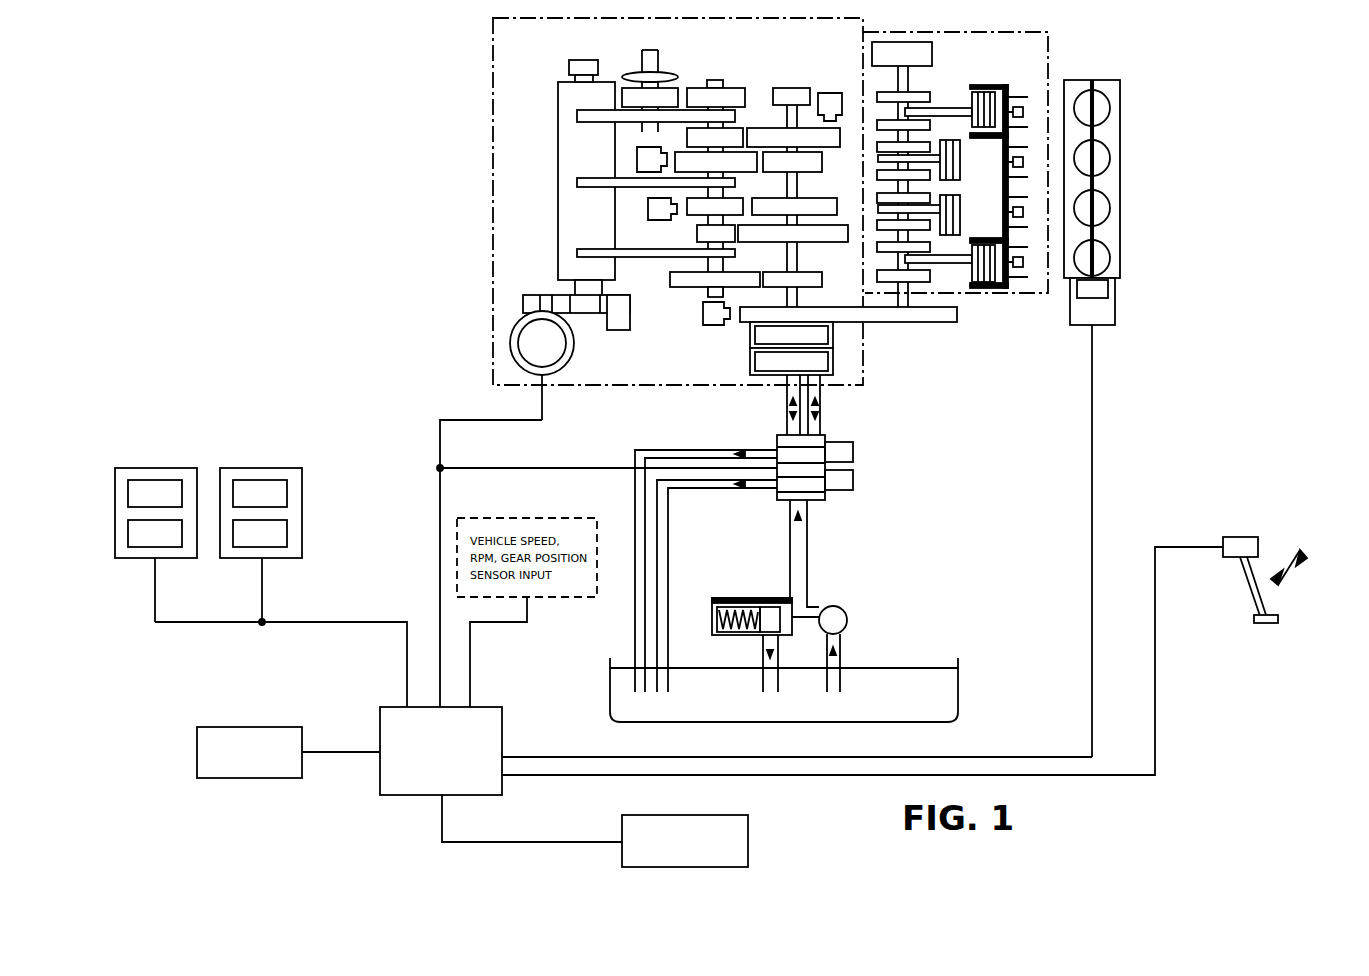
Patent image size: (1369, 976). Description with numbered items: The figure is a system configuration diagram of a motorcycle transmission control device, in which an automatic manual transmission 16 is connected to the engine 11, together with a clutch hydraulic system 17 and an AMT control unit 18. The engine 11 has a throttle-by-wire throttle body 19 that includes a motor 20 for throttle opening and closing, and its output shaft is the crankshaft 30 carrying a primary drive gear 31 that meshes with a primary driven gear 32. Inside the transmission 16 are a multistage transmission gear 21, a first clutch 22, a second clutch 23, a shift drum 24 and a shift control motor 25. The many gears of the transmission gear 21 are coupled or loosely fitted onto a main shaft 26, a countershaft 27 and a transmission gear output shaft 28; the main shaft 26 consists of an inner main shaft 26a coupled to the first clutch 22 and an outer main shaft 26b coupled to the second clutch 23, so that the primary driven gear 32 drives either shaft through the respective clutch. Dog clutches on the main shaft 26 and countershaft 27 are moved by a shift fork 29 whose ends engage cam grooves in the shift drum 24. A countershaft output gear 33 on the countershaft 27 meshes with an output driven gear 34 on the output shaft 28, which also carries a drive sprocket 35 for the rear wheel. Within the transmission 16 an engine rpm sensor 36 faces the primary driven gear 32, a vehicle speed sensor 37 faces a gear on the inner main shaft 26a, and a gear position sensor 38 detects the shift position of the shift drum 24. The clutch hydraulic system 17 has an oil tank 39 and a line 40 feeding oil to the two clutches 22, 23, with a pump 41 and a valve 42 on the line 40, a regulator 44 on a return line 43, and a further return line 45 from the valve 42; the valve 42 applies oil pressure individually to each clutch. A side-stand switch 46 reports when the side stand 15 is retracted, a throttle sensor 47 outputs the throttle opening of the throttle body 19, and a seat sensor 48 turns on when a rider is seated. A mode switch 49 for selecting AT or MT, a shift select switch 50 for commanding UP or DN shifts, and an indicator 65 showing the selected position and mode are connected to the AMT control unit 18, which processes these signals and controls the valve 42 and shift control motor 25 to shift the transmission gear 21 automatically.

The engine 11 is at (1052, 47).
The side stand 15 is at (1268, 606).
The automatic manual transmission 16 is at (488, 88).
The clutch hydraulic system 17 is at (962, 702).
The AMT control unit 18 is at (487, 707).
The throttle body 19 is at (1120, 96).
The motor 20 is at (1108, 325).
The transmission gear 21 is at (650, 344).
The first clutch 22 is at (836, 362).
The second clutch 23 is at (836, 336).
The shift drum 24 is at (558, 100).
The shift control motor 25 is at (510, 345).
The main shaft 26 is at (800, 180).
The inner main shaft 26a is at (800, 295).
The outer main shaft 26b is at (800, 253).
The countershaft 27 is at (712, 264).
The transmission gear output shaft 28 is at (662, 134).
The shift fork 29 is at (587, 118).
The crankshaft 30 is at (925, 298).
The primary drive gear 31 is at (957, 320).
The primary driven gear 32 is at (755, 322).
The countershaft output gear 33 is at (738, 88).
The output driven gear 34 is at (670, 90).
The drive sprocket 35 is at (640, 74).
The engine rpm sensor 36 is at (702, 316).
The vehicle speed sensor 37 is at (830, 93).
The gear position sensor 38 is at (569, 66).
The oil tank 39 is at (612, 690).
The line 40 is at (808, 575).
The pump 41 is at (848, 622).
The valve 42 is at (856, 452).
The return line 43 is at (762, 654).
The regulator 44 is at (714, 598).
The return line 45 is at (668, 616).
The side-stand switch 46 is at (1242, 537).
The throttle sensor 47 is at (1110, 290).
The seat sensor 48 is at (750, 840).
The mode switch 49 is at (285, 468).
The shift select switch 50 is at (170, 468).
The indicator 65 is at (272, 727).